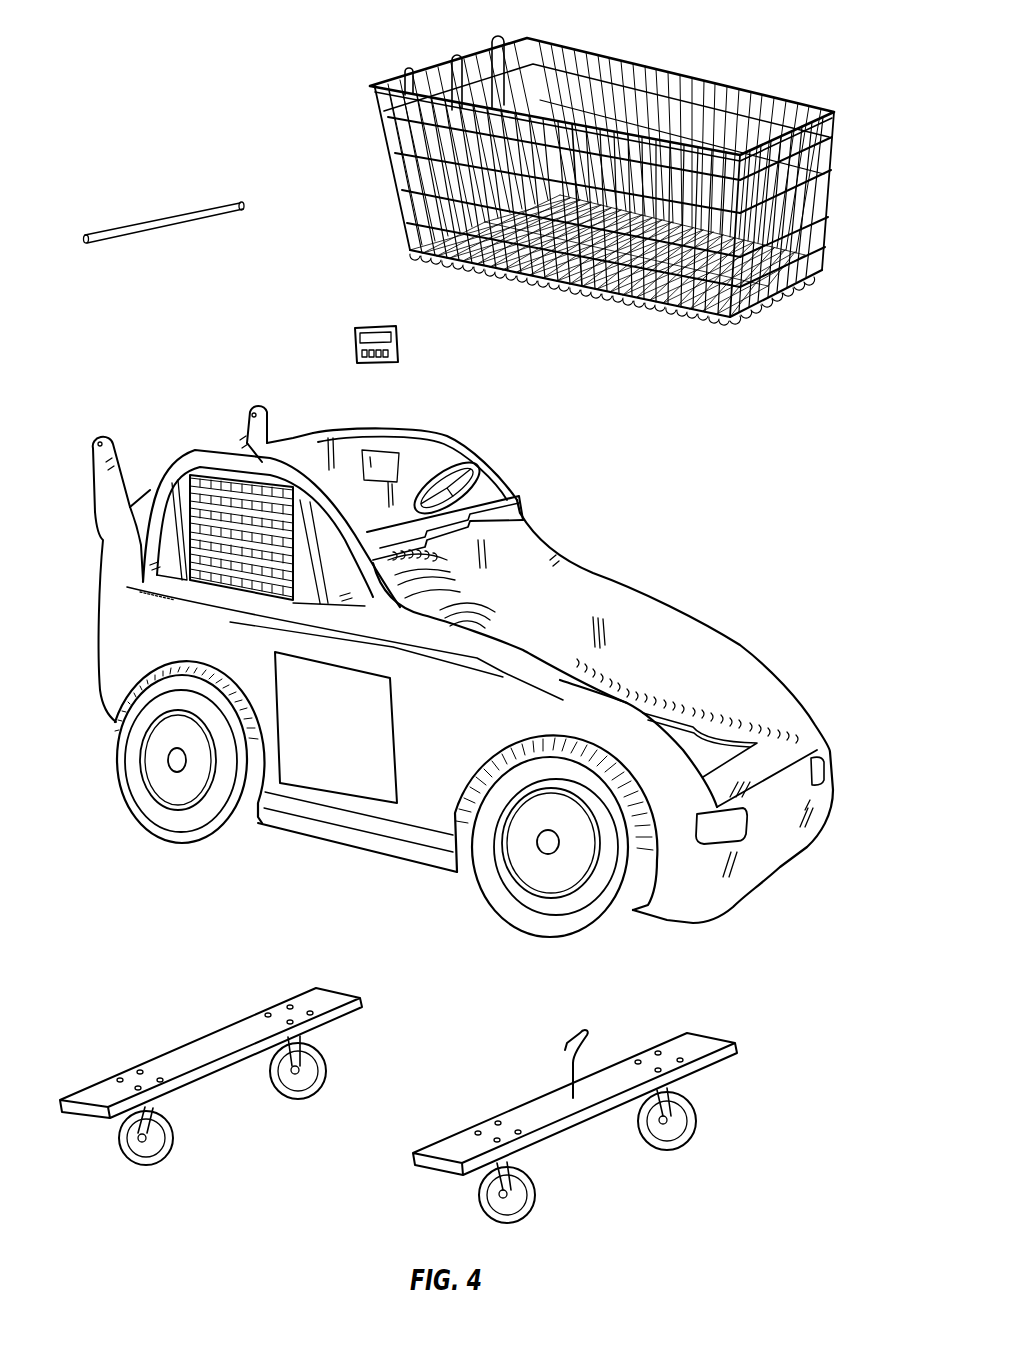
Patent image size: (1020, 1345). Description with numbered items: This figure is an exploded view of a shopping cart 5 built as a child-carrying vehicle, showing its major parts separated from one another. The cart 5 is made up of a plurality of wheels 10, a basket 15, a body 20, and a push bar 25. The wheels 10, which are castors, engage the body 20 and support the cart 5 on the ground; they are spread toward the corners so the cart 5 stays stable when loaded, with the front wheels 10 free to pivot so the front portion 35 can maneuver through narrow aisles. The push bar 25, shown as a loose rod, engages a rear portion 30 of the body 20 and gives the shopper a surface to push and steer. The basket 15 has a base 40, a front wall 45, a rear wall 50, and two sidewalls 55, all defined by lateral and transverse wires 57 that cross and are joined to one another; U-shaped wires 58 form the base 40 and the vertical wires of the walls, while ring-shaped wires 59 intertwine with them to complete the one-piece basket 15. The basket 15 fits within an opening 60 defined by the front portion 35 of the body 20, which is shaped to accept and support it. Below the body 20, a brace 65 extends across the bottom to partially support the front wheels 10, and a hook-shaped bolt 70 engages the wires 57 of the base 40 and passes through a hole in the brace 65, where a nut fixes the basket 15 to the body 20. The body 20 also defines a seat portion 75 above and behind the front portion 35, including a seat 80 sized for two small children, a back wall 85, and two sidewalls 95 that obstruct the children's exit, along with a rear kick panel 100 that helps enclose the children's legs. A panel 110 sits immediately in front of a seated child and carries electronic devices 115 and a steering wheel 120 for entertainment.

The shopping cart 5 is at (137, 373).
The wheels 10 is at (310, 1093).
The basket 15 is at (737, 61).
The body 20 is at (590, 572).
The push bar 25 is at (166, 215).
The rear portion 30 is at (113, 615).
The front portion 35 is at (827, 792).
The base 40 is at (722, 323).
The front wall 45 is at (808, 187).
The rear wall 50 is at (447, 72).
The sidewalls 55 is at (633, 95).
The wires 57 is at (470, 60).
The U-shaped wires 58 is at (570, 85).
The ring-shaped wires 59 is at (813, 250).
The opening 60 is at (723, 660).
The brace 65 is at (197, 1047).
The hook-shaped bolt 70 is at (575, 1028).
The seat portion 75 is at (417, 447).
The seat 80 is at (447, 556).
The back wall 85 is at (320, 432).
The sidewalls 95 is at (347, 447).
The rear kick panel 100 is at (447, 598).
The panel 110 is at (515, 491).
The electronic devices 115 is at (358, 325).
The steering wheels 120 is at (460, 452).